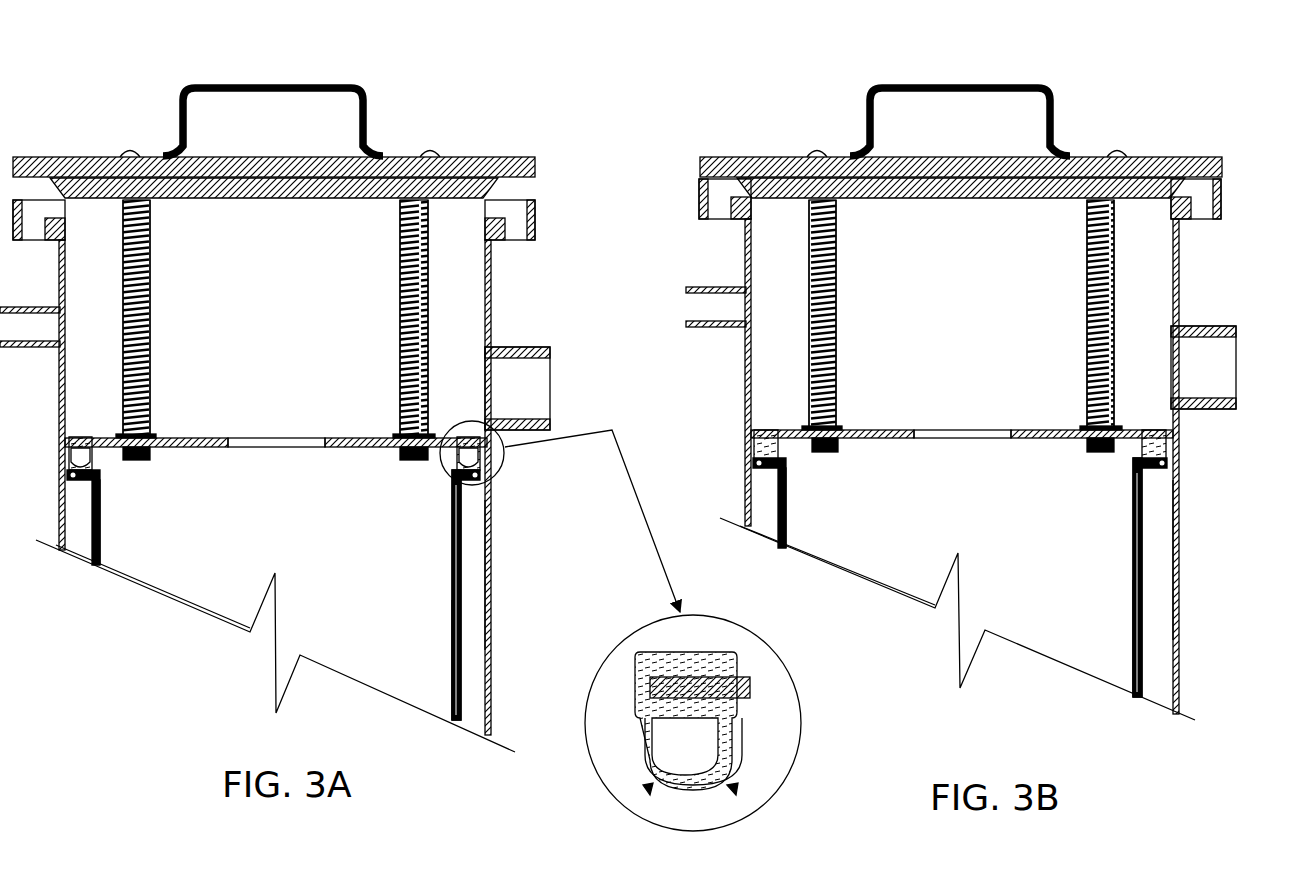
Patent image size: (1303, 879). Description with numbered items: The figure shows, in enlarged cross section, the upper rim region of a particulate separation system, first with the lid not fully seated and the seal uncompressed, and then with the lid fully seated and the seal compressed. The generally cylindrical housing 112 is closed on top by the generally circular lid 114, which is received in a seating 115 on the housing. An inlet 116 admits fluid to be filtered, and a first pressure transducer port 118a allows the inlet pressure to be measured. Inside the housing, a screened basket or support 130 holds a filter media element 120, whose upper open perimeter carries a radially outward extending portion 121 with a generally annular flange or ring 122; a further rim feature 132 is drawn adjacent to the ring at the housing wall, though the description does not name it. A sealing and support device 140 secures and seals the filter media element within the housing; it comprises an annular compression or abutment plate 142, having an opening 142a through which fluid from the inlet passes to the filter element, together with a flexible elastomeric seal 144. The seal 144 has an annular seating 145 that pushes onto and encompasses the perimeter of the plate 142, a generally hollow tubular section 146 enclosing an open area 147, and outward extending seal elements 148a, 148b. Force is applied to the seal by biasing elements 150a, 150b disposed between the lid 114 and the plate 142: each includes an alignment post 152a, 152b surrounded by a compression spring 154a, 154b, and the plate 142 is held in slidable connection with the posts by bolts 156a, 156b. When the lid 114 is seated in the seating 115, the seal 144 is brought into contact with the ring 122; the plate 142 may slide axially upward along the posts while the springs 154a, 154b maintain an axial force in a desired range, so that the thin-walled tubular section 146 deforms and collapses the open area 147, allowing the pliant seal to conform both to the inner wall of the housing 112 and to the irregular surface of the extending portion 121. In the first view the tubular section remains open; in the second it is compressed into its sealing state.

In FIG. 3A, the housing 112 is at (496, 582).
In FIG. 3B, the housing 112 is at (1183, 572).
In FIG. 3A, the lid 114 is at (488, 142).
In FIG. 3B, the lid 114 is at (1180, 122).
In FIG. 3A, the seating 115 is at (505, 203).
In FIG. 3B, the seating 115 is at (1195, 190).
In FIG. 3A, the inlet 116 is at (530, 395).
In FIG. 3B, the inlet 116 is at (1195, 378).
In FIG. 3A, the first pressure transducer port 118a is at (18, 350).
In FIG. 3B, the first pressure transducer port 118a is at (698, 333).
In FIG. 3A, the filter media element 120 is at (105, 555).
In FIG. 3B, the filter media element 120 is at (792, 522).
In FIG. 3A, the radially outward extending portion 121 is at (100, 490).
In FIG. 3B, the radially outward extending portion 121 is at (792, 480).
In FIG. 3A, the annular flange or ring 122 is at (487, 480).
In FIG. 3B, the annular flange or ring 122 is at (1178, 468).
In FIG. 3A, the basket or support 130 is at (470, 648).
In FIG. 3B, the basket or support 130 is at (1158, 628).
In FIG. 3A, the retainer flange 132 is at (492, 500).
In FIG. 3B, the retainer flange 132 is at (1180, 498).
In FIG. 3A, the sealing and support device 140 is at (335, 480).
In FIG. 3B, the sealing and support device 140 is at (1012, 500).
In FIG. 3A, the annular plate 142 is at (276, 483).
In FIG. 3B, the annular plate 142 is at (962, 472).
In FIG. 3A, the opening 142a is at (250, 450).
In FIG. 3B, the opening 142a is at (938, 442).
In FIG. 3A, the seal 144 is at (490, 460).
In FIG. 3B, the seal 144 is at (1178, 440).
In FIG. 3A, the annular seating 145 is at (645, 705).
In FIG. 3A, the tubular section 146 is at (732, 748).
In FIG. 3A, the open area 147 is at (700, 740).
In FIG. 3A, the seal element 148a is at (640, 790).
In FIG. 3A, the seal element 148b is at (740, 790).
In FIG. 3A, the biasing element 150a is at (170, 292).
In FIG. 3B, the biasing element 150a is at (860, 272).
In FIG. 3A, the biasing element 150b is at (460, 308).
In FIG. 3B, the biasing element 150b is at (1145, 285).
In FIG. 3A, the alignment post 152a is at (150, 377).
In FIG. 3B, the alignment post 152a is at (838, 350).
In FIG. 3A, the alignment post 152b is at (398, 258).
In FIG. 3B, the alignment post 152b is at (1085, 240).
In FIG. 3A, the compression spring 154a is at (150, 332).
In FIG. 3B, the compression spring 154a is at (840, 313).
In FIG. 3A, the compression spring 154b is at (398, 342).
In FIG. 3B, the compression spring 154b is at (1088, 330).
In FIG. 3A, the bolt 156a is at (145, 463).
In FIG. 3B, the bolt 156a is at (833, 460).
In FIG. 3A, the bolt 156b is at (412, 462).
In FIG. 3B, the bolt 156b is at (1090, 463).